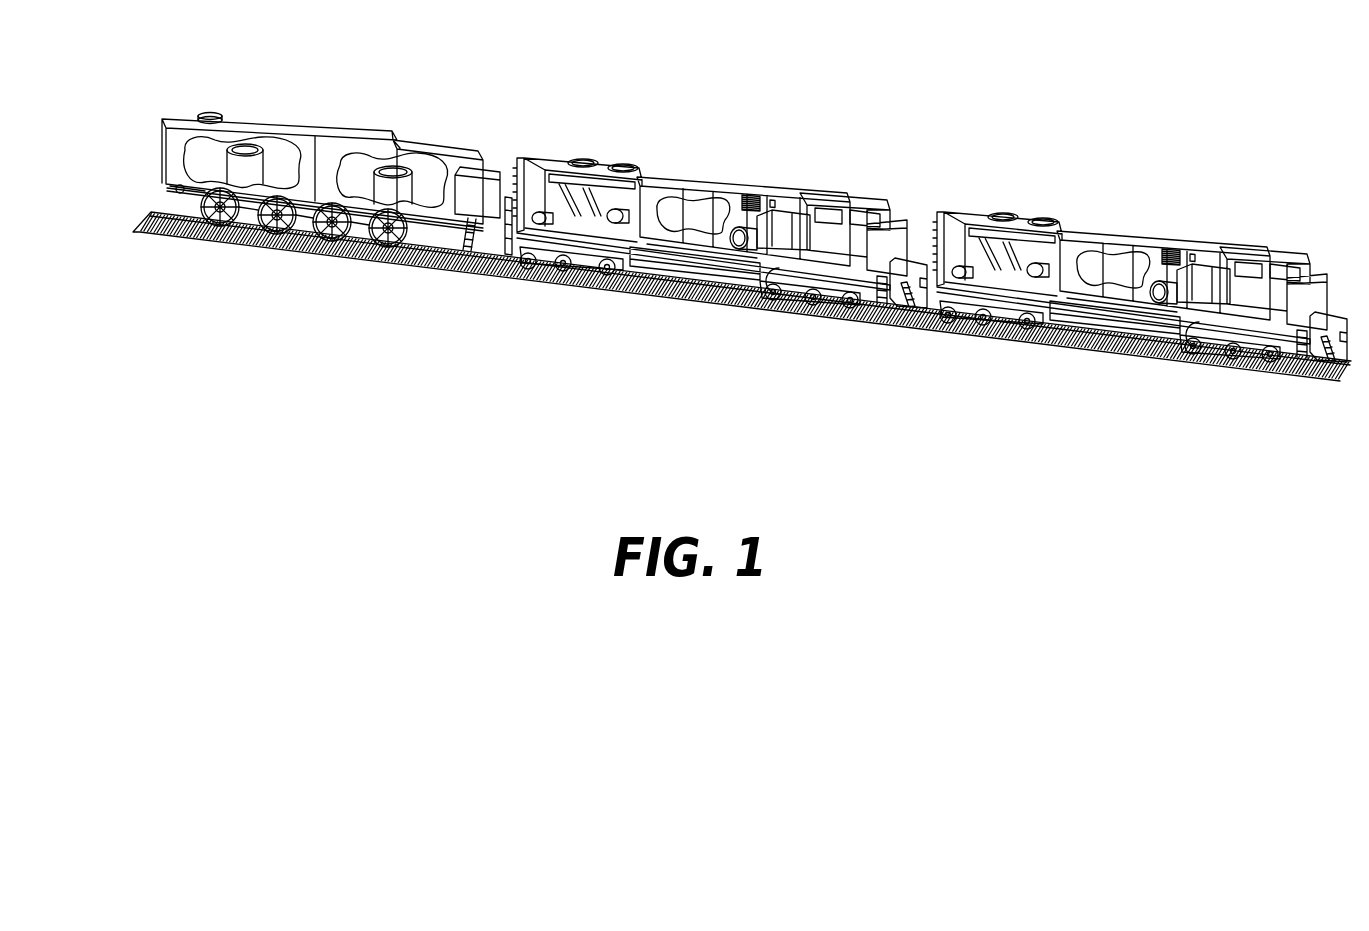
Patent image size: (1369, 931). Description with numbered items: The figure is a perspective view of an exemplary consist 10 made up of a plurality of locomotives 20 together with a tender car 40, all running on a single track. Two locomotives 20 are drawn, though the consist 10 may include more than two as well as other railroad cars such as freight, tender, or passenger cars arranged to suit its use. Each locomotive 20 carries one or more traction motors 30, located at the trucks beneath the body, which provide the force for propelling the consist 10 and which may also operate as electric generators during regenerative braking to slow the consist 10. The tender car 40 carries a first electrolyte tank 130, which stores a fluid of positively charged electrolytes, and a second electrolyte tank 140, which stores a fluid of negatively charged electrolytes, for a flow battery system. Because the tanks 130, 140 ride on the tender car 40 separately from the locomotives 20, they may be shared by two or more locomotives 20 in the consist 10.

The consist 10 is at (742, 229).
The locomotive 20 is at (709, 181).
The traction motor 30 is at (563, 270).
The tender car 40 is at (337, 154).
The first electrolyte tank 130 is at (237, 153).
The second electrolyte tank 140 is at (390, 177).